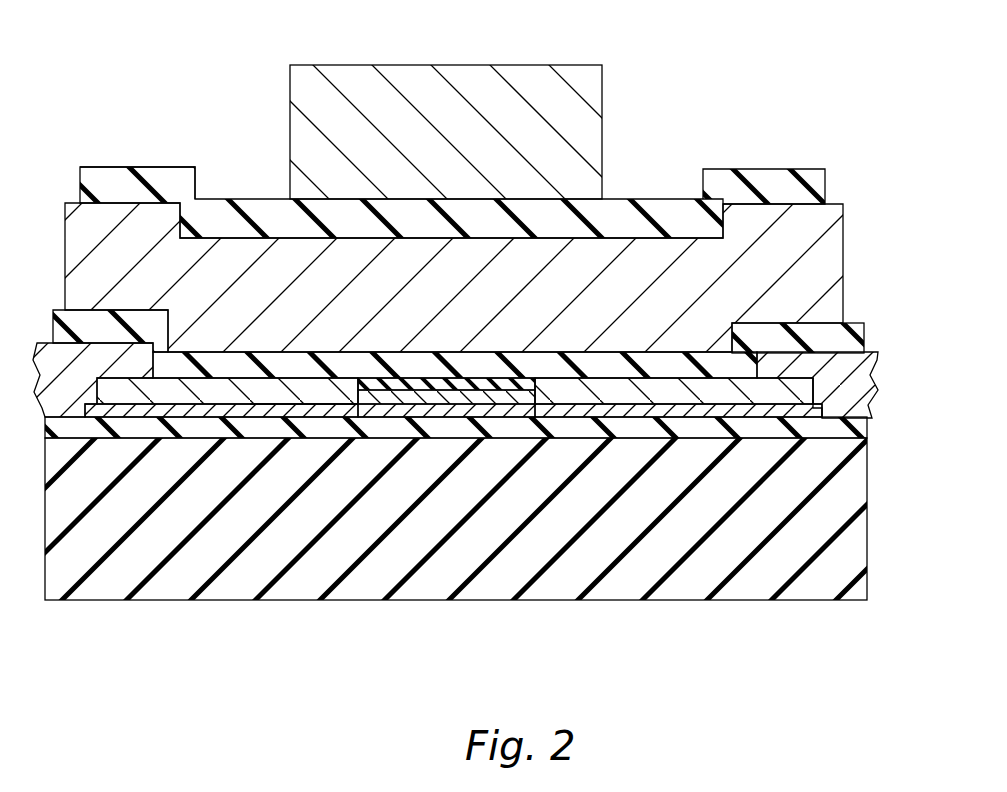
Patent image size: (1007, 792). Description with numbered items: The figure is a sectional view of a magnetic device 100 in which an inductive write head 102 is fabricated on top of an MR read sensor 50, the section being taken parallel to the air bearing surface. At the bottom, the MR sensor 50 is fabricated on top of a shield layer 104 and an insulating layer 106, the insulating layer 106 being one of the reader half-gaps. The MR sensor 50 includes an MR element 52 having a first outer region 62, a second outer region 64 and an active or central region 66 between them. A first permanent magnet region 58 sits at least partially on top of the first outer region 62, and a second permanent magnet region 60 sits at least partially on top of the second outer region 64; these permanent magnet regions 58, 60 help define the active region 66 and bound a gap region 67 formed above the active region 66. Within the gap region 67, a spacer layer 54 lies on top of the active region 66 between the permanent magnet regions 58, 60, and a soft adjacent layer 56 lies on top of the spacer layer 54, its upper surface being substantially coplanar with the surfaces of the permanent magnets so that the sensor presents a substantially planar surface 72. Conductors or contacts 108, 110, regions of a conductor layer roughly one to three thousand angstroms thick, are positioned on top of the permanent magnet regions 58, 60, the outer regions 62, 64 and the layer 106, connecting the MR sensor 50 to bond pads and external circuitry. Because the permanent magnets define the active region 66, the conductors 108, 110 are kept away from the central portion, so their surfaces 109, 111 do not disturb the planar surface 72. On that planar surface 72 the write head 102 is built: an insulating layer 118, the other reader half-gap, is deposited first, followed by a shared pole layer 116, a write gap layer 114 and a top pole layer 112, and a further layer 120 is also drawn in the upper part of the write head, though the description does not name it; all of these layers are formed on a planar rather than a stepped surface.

The MR sensor 50 is at (503, 578).
The MR element 52 is at (765, 412).
The spacer layer 54 is at (413, 400).
The soft adjacent layer 56 is at (388, 384).
The first permanent magnet region 58 is at (232, 388).
The second permanent magnet region 60 is at (595, 392).
The first outer region 62 is at (210, 407).
The second outer region 64 is at (598, 396).
The active region 66 is at (465, 412).
The gap region 67 is at (370, 376).
The substantially planar surface 72 is at (534, 371).
The magnetic device 100 is at (145, 112).
The inductive write head 102 is at (618, 126).
The shield layer 104 is at (122, 582).
The insulating layer 106 is at (78, 423).
The conductor 108 is at (58, 355).
The surface of conductor 109 is at (111, 333).
The conductor 110 is at (805, 372).
The surface of conductor 111 is at (833, 364).
The top pole layer 112 is at (565, 73).
The write gap layer 114 is at (720, 180).
The shared pole layer 116 is at (838, 207).
The insulating layer 118 is at (848, 346).
The metal film layer 120 is at (618, 197).